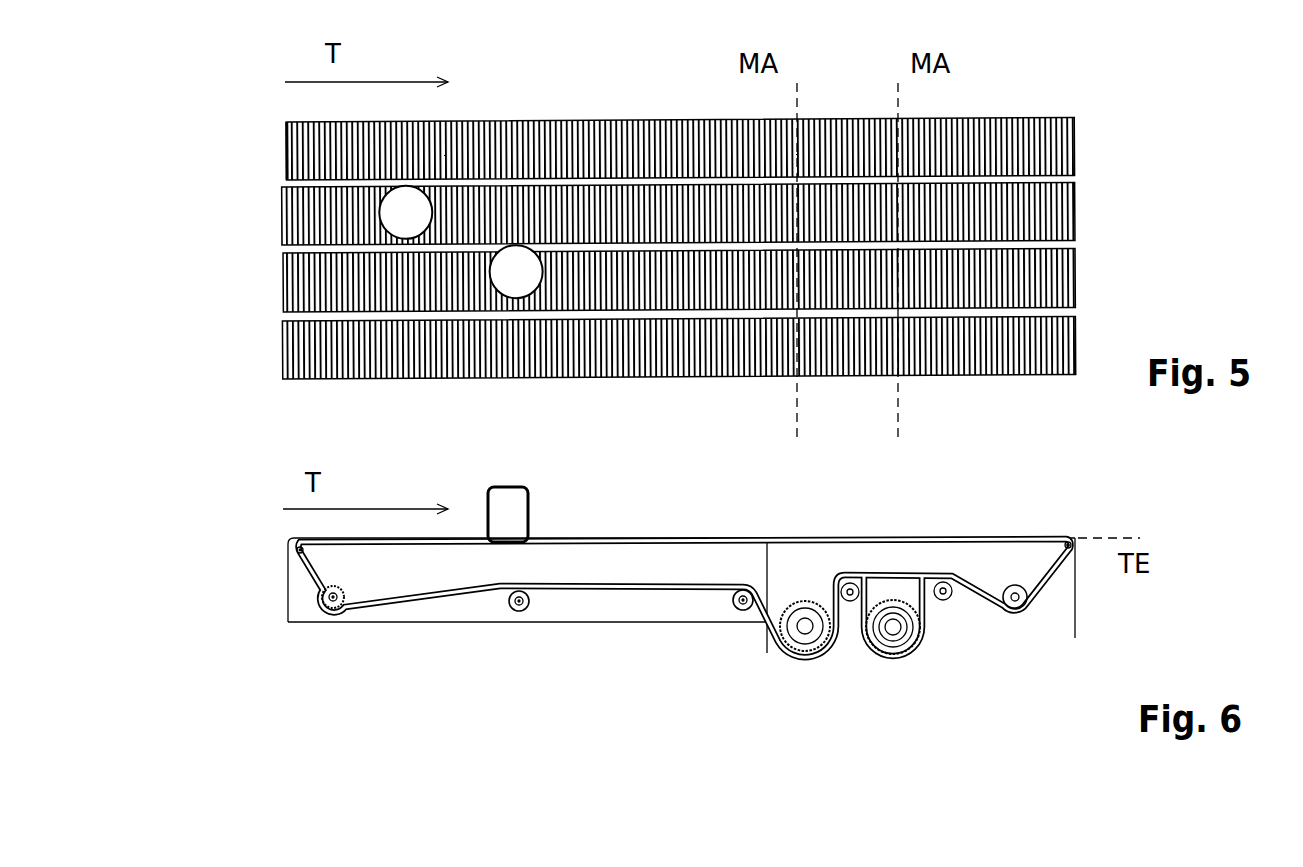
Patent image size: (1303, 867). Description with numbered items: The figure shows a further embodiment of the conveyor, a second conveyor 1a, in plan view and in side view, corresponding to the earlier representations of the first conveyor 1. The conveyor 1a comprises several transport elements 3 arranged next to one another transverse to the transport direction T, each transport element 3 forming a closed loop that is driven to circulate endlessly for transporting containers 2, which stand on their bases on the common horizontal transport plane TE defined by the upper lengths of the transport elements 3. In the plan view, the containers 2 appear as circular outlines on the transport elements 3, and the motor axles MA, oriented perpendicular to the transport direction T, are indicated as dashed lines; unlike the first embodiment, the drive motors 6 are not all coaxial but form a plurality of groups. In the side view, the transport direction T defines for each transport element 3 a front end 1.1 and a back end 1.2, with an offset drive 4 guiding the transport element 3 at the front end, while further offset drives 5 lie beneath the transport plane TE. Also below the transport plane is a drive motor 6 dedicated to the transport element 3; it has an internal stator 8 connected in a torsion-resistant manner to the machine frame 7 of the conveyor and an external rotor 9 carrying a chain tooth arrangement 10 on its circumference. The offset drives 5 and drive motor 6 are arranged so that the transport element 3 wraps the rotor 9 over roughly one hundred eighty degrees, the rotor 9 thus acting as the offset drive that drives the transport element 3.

In FIG. 6, the conveyor 1 is at (1074, 517).
In FIG. 5, the second conveyor 1a is at (1077, 98).
In FIG. 5, the front end 1.1 is at (284, 284).
In FIG. 6, the front end 1.1 is at (277, 598).
In FIG. 5, the back end 1.2 is at (1081, 212).
In FIG. 6, the back end 1.2 is at (1094, 581).
In FIG. 5, the container 2 is at (400, 213).
In FIG. 6, the container 2 is at (507, 515).
In FIG. 5, the transport element 3 is at (750, 335).
In FIG. 6, the transport element 3 is at (728, 588).
In FIG. 6, the offset drive 4 is at (297, 545).
In FIG. 6, the offset drive 5 is at (509, 607).
In FIG. 6, the drive motor 6 is at (819, 669).
In FIG. 6, the machine frame 7 is at (583, 605).
In FIG. 6, the internal stator 8 is at (896, 629).
In FIG. 6, the external rotor 9 is at (913, 627).
In FIG. 6, the chain tooth arrangement 10 is at (900, 597).